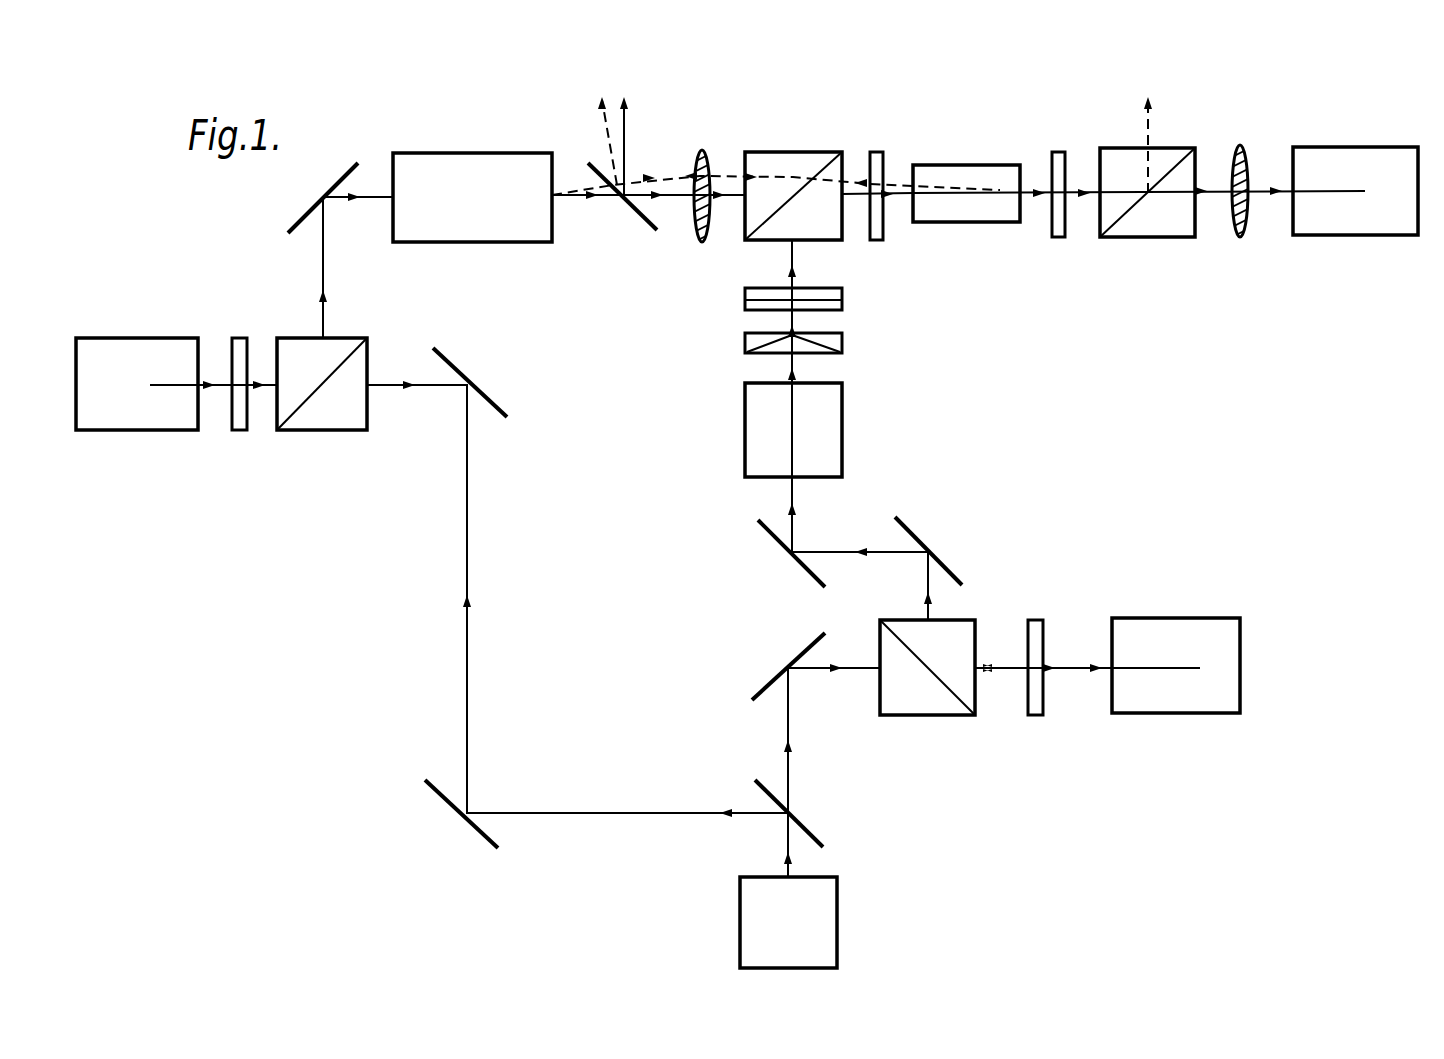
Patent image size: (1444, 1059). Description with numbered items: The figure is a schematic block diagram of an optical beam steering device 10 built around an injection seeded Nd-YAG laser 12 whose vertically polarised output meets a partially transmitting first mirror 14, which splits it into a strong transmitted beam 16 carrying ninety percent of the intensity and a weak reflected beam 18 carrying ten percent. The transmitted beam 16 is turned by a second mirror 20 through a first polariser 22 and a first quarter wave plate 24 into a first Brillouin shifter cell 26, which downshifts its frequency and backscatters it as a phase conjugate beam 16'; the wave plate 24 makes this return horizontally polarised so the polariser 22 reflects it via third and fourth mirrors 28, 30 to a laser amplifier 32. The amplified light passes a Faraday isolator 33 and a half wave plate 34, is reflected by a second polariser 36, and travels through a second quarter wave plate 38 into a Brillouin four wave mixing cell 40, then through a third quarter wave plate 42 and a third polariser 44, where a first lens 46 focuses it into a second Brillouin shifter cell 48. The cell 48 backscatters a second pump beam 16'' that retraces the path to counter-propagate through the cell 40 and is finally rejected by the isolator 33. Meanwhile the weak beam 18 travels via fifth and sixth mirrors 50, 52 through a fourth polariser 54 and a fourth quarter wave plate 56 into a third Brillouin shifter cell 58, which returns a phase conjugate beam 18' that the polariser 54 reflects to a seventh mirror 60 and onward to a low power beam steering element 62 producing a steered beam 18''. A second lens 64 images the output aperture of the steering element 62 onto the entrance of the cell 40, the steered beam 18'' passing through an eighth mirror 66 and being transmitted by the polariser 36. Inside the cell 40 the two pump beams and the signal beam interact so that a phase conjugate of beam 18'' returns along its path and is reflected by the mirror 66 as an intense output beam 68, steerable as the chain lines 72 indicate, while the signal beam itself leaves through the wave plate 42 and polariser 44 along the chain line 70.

The optical beam steering device 10 is at (1155, 485).
The injection seeded Nd-YAG laser 12 is at (838, 892).
The first mirror 14 is at (820, 837).
The transmitted beam 16 is at (832, 743).
The phase conjugate beam 16' is at (976, 431).
The second pump beam 16'' is at (1139, 242).
The reflected beam 18 is at (518, 575).
The phase conjugate beam 18' is at (271, 291).
The steered beam 18'' is at (851, 194).
The second mirror 20 is at (763, 690).
The first polariser 22 is at (948, 715).
The first quarter wave plate 24 is at (1043, 715).
The first Brillouin shifter cell 26 is at (1175, 713).
The third mirror 28 is at (958, 577).
The fourth mirror 30 is at (763, 530).
The laser amplifier 32 is at (843, 408).
The Faraday isolator 33 is at (843, 342).
The half wave plate 34 is at (747, 312).
The second polariser 36 is at (837, 240).
The second quarter wave plate 38 is at (877, 152).
The Brillouin four wave mixing cell 40 is at (953, 167).
The third quarter wave plate 42 is at (1058, 143).
The third polariser 44 is at (1182, 147).
The first lens 46 is at (1238, 147).
The second Brillouin shifter cell 48 is at (1350, 147).
The fifth mirror 50 is at (488, 842).
The sixth mirror 52 is at (500, 403).
The fourth polariser 54 is at (333, 430).
The fourth quarter wave plate 56 is at (240, 430).
The third Brillouin shifter cell 58 is at (172, 430).
The seventh mirror 60 is at (293, 223).
The beam steering element 62 is at (503, 242).
The second lens 64 is at (698, 232).
The eighth mirror 66 is at (653, 228).
The output beam 68 is at (625, 137).
The chain line 70 is at (1150, 118).
The chain lines 72 is at (603, 132).